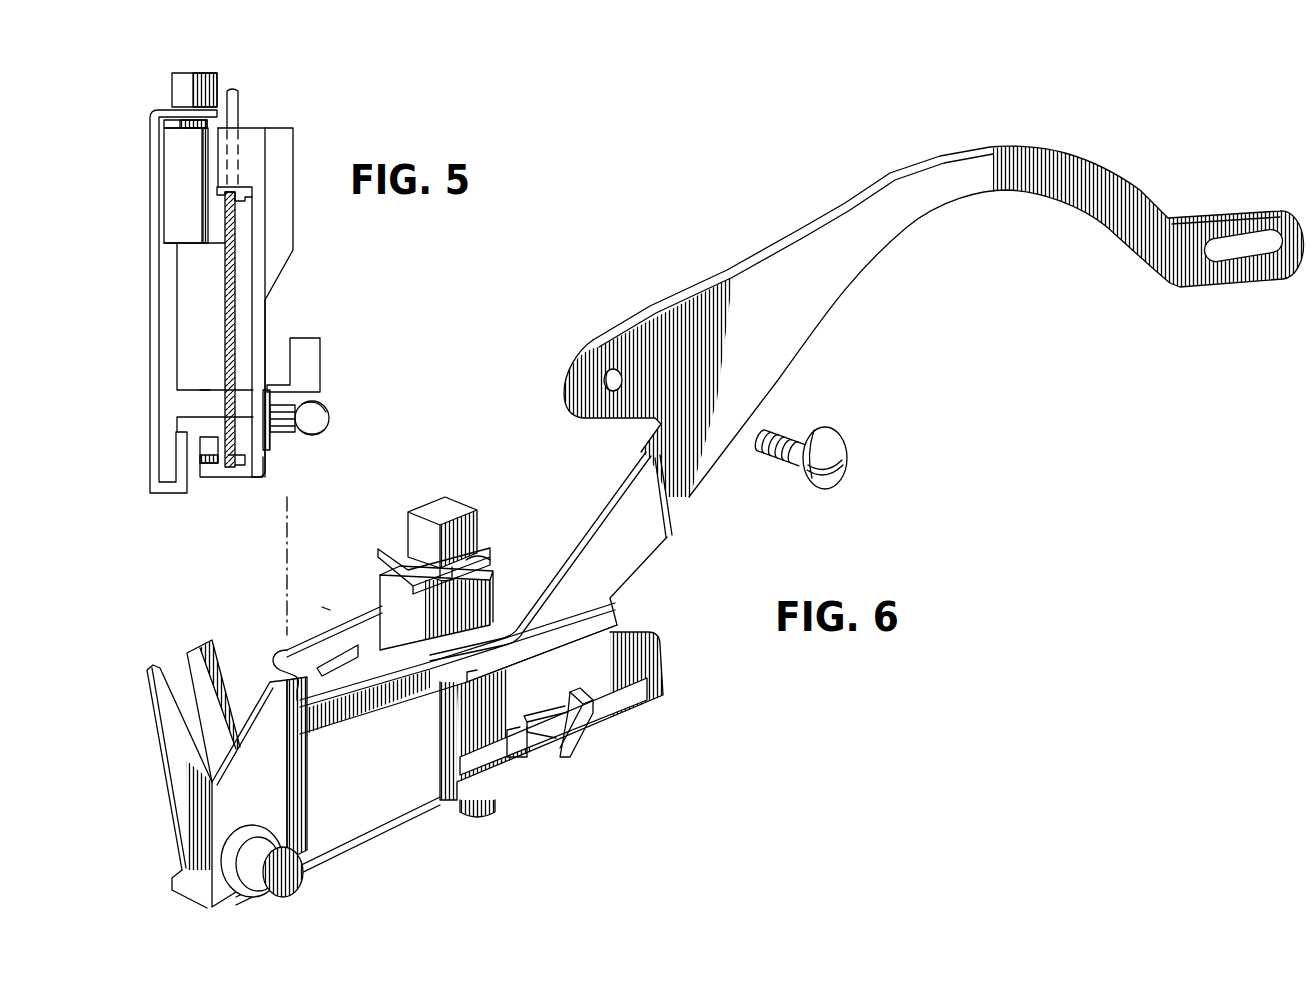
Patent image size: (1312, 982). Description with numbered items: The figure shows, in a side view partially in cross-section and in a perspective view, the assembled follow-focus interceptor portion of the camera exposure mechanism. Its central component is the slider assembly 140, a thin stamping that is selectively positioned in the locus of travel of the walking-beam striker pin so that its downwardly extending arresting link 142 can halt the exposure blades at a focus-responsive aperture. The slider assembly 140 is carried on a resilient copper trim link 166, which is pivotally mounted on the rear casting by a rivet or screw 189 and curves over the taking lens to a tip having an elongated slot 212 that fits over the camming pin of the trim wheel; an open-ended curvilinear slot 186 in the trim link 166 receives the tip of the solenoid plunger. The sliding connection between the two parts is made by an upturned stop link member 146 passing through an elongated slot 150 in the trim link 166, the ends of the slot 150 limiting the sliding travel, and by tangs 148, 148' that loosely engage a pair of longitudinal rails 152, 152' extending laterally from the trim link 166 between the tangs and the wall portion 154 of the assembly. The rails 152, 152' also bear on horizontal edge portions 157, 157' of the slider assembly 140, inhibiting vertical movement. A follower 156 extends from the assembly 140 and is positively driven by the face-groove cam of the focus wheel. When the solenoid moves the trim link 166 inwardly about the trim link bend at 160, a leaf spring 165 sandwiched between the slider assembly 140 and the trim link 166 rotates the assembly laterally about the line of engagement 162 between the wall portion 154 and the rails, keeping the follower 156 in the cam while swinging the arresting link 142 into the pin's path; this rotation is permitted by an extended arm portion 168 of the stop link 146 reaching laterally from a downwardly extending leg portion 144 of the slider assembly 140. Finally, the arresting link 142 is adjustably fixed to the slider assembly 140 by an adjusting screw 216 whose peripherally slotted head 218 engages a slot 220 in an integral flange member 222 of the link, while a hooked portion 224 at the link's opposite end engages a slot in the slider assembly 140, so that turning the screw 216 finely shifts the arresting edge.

In FIG. 6, the slider assembly 140 is at (322, 607).
In FIG. 5, the arresting link 142 is at (150, 357).
In FIG. 6, the arresting link 142 is at (386, 612).
In FIG. 5, the leg portion 144 is at (177, 312).
In FIG. 5, the stop link member 146 is at (318, 352).
In FIG. 6, the stop link member 146 is at (586, 726).
In FIG. 5, the tang 148 is at (277, 329).
In FIG. 5, the tang 148' is at (202, 485).
In FIG. 6, the elongated slot 150 is at (650, 696).
In FIG. 5, the longitudinal rail 152 is at (274, 175).
In FIG. 6, the longitudinal rail 152 is at (338, 805).
In FIG. 5, the longitudinal rail 152' is at (274, 463).
In FIG. 5, the wall portion 154 is at (266, 318).
In FIG. 6, the wall portion 154 is at (283, 790).
In FIG. 5, the follower 156 is at (326, 418).
In FIG. 6, the follower 156 is at (300, 878).
In FIG. 5, the horizontal edge portion 157 is at (167, 185).
In FIG. 5, the horizontal edge portion 157' is at (247, 499).
In FIG. 6, the trim link bend 160 is at (686, 500).
In FIG. 5, the line of engagement 162 is at (290, 502).
In FIG. 6, the leaf spring 165 is at (336, 662).
In FIG. 5, the trim link 166 is at (238, 112).
In FIG. 6, the trim link 166 is at (786, 382).
In FIG. 5, the arm portion 168 is at (205, 392).
In FIG. 6, the arm portion 168 is at (520, 735).
In FIG. 6, the curvilinear slot 186 is at (178, 677).
In FIG. 6, the rivet or screw 189 is at (818, 438).
In FIG. 6, the elongated slot 212 is at (1252, 245).
In FIG. 5, the adjusting screw 216 is at (178, 90).
In FIG. 6, the adjusting screw 216 is at (428, 500).
In FIG. 6, the peripheral slot 218 is at (488, 586).
In FIG. 6, the slot 220 is at (470, 566).
In FIG. 6, the flange member 222 is at (388, 553).
In FIG. 6, the hooked portion 224 is at (487, 825).